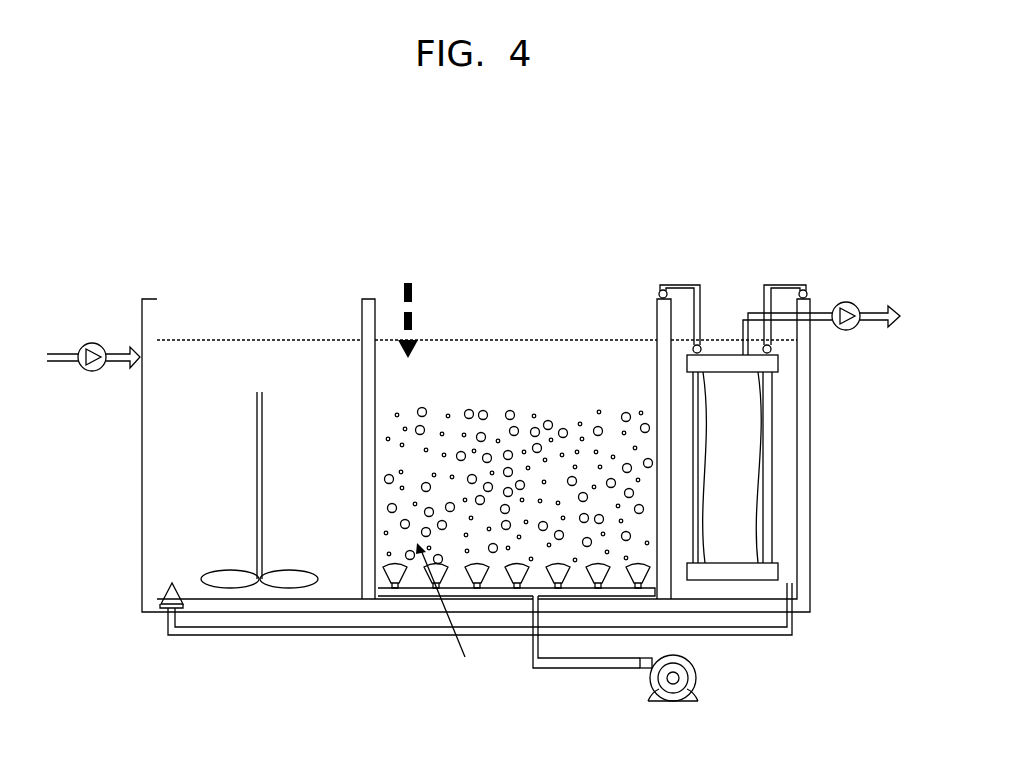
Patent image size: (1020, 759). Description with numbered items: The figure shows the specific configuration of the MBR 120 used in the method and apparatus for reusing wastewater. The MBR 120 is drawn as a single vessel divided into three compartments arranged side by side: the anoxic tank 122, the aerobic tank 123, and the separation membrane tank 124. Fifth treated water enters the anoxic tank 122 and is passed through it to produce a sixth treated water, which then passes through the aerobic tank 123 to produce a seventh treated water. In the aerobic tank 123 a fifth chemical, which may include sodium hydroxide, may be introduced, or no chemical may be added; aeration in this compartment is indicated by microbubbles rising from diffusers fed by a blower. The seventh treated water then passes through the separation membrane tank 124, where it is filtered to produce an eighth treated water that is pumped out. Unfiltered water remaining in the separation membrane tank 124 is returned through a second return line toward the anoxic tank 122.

The MBR 120 is at (740, 222).
The anoxic tank 122 is at (258, 347).
The aerobic tank 123 is at (517, 345).
The separation membrane tank 124 is at (728, 375).